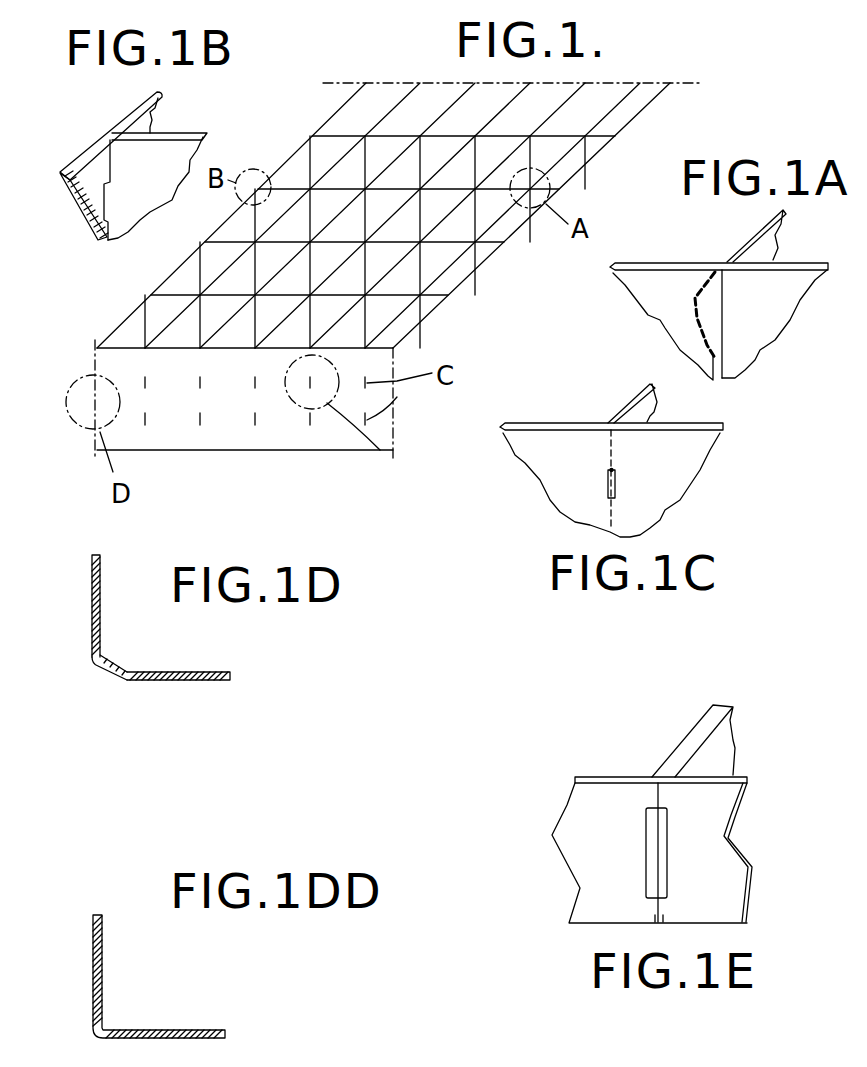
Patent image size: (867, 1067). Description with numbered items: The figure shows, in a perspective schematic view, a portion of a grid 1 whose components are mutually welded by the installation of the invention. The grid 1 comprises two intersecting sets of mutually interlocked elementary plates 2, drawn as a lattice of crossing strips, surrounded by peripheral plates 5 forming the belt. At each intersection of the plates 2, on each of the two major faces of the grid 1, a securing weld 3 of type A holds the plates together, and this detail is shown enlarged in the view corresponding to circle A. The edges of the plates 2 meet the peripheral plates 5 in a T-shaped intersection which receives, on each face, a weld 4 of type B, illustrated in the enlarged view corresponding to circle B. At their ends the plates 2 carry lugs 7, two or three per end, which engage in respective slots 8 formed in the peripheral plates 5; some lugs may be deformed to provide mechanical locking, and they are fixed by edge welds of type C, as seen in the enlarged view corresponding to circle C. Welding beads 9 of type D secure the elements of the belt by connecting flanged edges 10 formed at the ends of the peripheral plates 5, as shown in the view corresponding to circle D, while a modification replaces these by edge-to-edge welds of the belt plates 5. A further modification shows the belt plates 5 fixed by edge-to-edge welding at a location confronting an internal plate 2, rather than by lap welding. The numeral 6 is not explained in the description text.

In FIG. 1, the grid 1 is at (333, 105).
In FIG. 1, the elementary plates 2 is at (467, 265).
In FIG. 1E, the elementary plates 2 is at (702, 733).
In FIG. 1, the securing weld 3 is at (310, 186).
In FIG. 1A, the securing weld 3 is at (728, 260).
In FIG. 1, the weld 4 is at (203, 242).
In FIG. 1B, the weld 4 is at (108, 131).
In FIG. 1, the peripheral plates 5 is at (368, 360).
In FIG. 1D, the peripheral plates 5 is at (187, 681).
In FIG. 1DD, the peripheral plates 5 is at (103, 950).
In FIG. 1E, the peripheral plates 5 is at (577, 817).
In FIG. 1, the joint region 6 is at (311, 410).
In FIG. 1C, the joint region 6 is at (607, 472).
In FIG. 1C, the lugs 7 is at (615, 487).
In FIG. 1C, the slots 8 is at (615, 498).
In FIG. 1, the welding beads 9 is at (103, 378).
In FIG. 1D, the welding beads 9 is at (97, 665).
In FIG. 1D, the flanged edges 10 is at (112, 662).